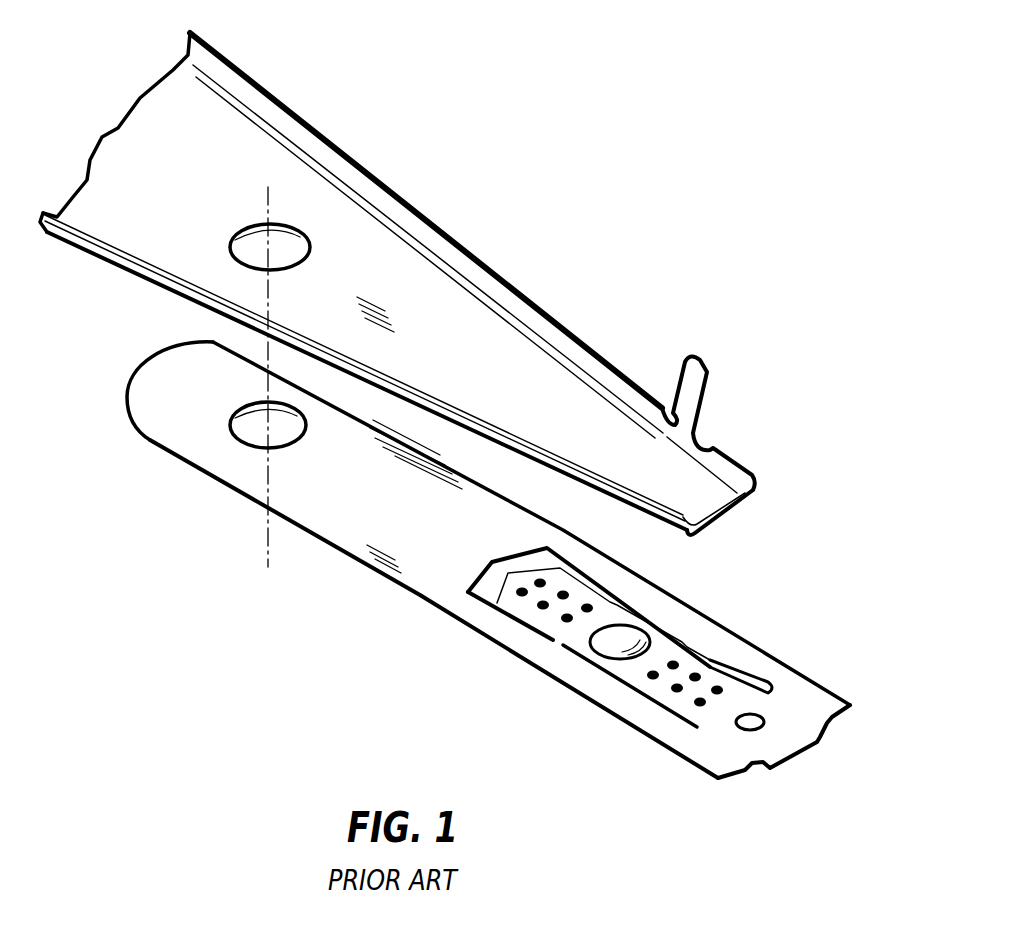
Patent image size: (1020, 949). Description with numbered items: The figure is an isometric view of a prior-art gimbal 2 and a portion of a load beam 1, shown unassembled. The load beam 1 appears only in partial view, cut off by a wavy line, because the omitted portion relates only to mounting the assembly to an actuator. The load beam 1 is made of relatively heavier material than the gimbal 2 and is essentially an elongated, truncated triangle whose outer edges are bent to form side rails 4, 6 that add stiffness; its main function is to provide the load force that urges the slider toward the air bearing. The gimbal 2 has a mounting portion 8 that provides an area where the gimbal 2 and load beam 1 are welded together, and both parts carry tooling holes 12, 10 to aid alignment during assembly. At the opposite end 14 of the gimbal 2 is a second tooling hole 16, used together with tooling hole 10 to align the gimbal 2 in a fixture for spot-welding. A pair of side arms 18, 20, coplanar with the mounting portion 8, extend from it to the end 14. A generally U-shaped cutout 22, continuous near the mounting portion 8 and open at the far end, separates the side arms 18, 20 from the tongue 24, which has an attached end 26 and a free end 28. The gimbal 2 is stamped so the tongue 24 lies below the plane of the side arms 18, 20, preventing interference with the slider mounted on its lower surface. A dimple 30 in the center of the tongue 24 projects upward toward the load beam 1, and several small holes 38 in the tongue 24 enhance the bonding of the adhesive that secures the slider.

The load beam 1 is at (393, 172).
The gimbal 2 is at (332, 547).
The side rail 4 is at (475, 268).
The side rail 6 is at (553, 467).
The mounting portion 8 is at (160, 387).
The tooling hole 10 is at (260, 428).
The tooling hole 12 is at (260, 247).
The opposite end 14 is at (832, 725).
The second tooling hole 16 is at (752, 725).
The side arm 18 is at (558, 662).
The side arm 20 is at (658, 603).
The U-shaped cutout 22 is at (488, 588).
The tongue 24 is at (580, 637).
The attached end 26 is at (723, 707).
The free end 28 is at (512, 588).
The dimple 30 is at (620, 653).
The small holes 38 is at (700, 702).